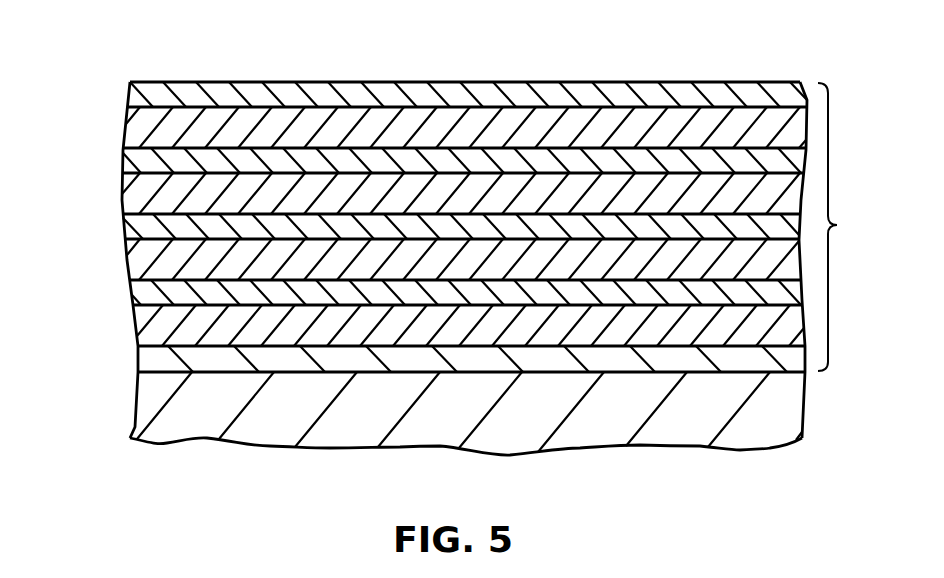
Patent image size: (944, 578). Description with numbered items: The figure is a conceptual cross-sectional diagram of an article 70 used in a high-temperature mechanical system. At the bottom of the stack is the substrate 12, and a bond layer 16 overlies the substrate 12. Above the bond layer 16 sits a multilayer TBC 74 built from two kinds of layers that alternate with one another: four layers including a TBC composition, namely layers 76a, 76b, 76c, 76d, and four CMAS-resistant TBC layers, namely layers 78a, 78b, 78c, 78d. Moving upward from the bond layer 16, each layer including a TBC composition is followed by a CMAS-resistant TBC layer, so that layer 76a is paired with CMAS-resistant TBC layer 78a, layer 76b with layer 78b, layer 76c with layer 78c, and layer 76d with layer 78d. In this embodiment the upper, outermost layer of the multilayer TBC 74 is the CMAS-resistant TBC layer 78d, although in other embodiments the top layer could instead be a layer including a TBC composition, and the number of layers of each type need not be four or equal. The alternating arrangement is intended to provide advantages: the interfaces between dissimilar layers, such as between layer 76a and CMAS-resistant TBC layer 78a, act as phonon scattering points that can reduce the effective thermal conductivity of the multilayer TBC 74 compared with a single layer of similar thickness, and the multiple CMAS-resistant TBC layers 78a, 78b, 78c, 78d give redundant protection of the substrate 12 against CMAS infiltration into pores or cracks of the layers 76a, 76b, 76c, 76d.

The article 70 is at (94, 36).
The substrate 12 is at (140, 404).
The bond layer 16 is at (142, 359).
The multilayer TBC 74 is at (842, 227).
The layer including a TBC composition 76a is at (136, 325).
The layer including a TBC composition 76b is at (128, 262).
The layer including a TBC composition 76c is at (122, 195).
The layer including a TBC composition 76d is at (128, 129).
The CMAS-resistant TBC layer 78a is at (132, 295).
The CMAS-resistant TBC layer 78b is at (124, 229).
The CMAS-resistant TBC layer 78c is at (124, 162).
The CMAS-resistant TBC layer 78d is at (130, 95).